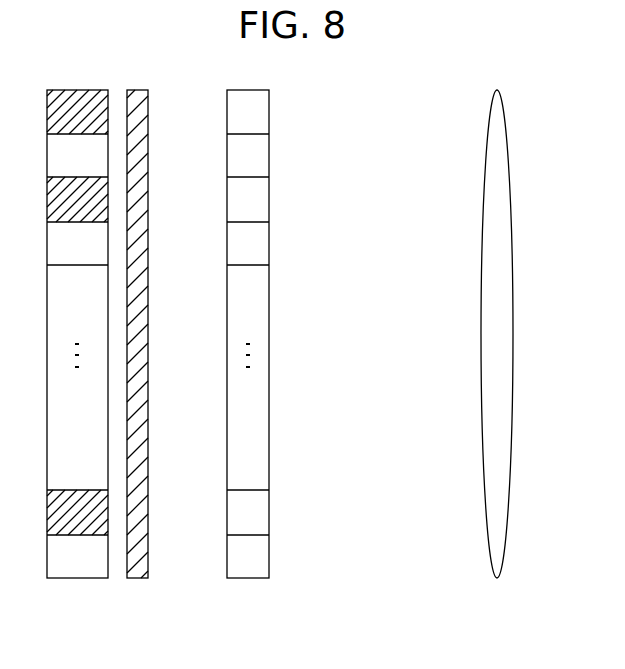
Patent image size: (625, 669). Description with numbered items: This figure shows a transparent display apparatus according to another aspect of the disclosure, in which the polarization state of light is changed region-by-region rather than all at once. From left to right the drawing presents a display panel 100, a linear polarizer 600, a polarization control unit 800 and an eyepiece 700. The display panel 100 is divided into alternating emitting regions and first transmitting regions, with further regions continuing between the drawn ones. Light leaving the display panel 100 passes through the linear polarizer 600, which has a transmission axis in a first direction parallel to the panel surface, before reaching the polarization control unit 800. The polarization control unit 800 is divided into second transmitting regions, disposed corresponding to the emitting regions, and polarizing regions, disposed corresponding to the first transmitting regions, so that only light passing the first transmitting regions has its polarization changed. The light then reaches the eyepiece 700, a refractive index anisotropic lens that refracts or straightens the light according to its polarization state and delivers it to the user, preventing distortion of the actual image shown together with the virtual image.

The display panel 100 is at (77, 580).
The linear polarizer 600 is at (137, 580).
The eyepiece 700 is at (497, 579).
The polarization control unit 800 is at (247, 580).